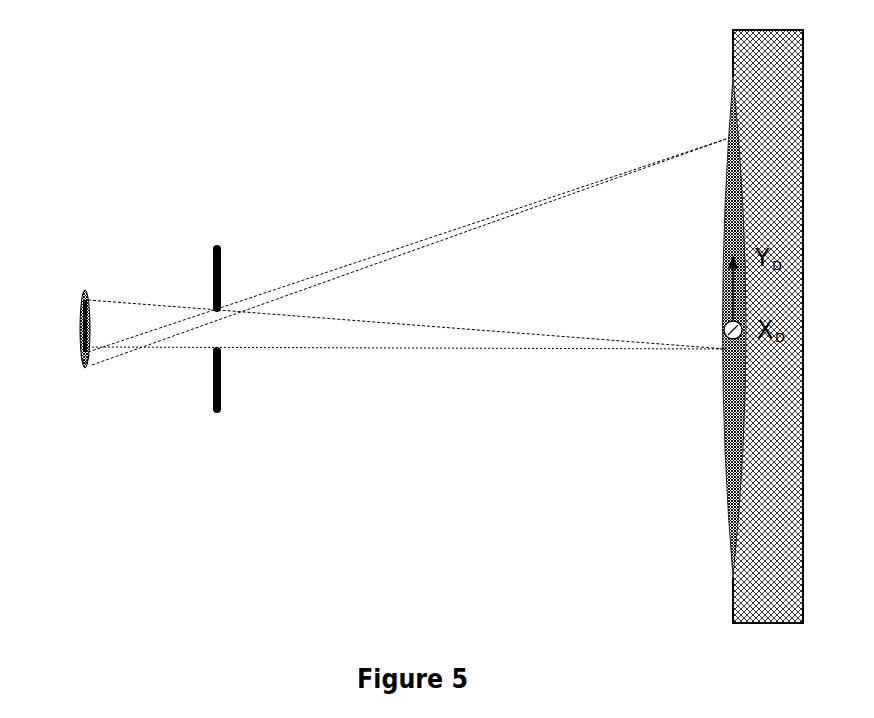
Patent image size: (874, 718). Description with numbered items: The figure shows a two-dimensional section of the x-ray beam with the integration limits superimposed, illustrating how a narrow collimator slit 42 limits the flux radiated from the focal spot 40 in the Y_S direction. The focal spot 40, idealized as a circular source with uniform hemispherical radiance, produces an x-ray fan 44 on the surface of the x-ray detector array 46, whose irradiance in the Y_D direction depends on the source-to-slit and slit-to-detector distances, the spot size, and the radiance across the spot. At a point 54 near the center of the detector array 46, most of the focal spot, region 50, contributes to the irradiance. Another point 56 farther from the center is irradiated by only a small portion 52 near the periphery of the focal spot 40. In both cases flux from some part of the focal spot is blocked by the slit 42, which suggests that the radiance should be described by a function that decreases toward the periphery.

The focal spot 40 is at (92, 288).
The collimator slit 42 is at (223, 255).
The x-ray fan 44 is at (730, 513).
The x-ray detector array 46 is at (730, 45).
The region of focal spot 50 is at (82, 318).
The small portion of focal spot 52 is at (90, 363).
The point near the center of detector array 54 is at (730, 353).
The point farther from the center of detector array 56 is at (730, 135).